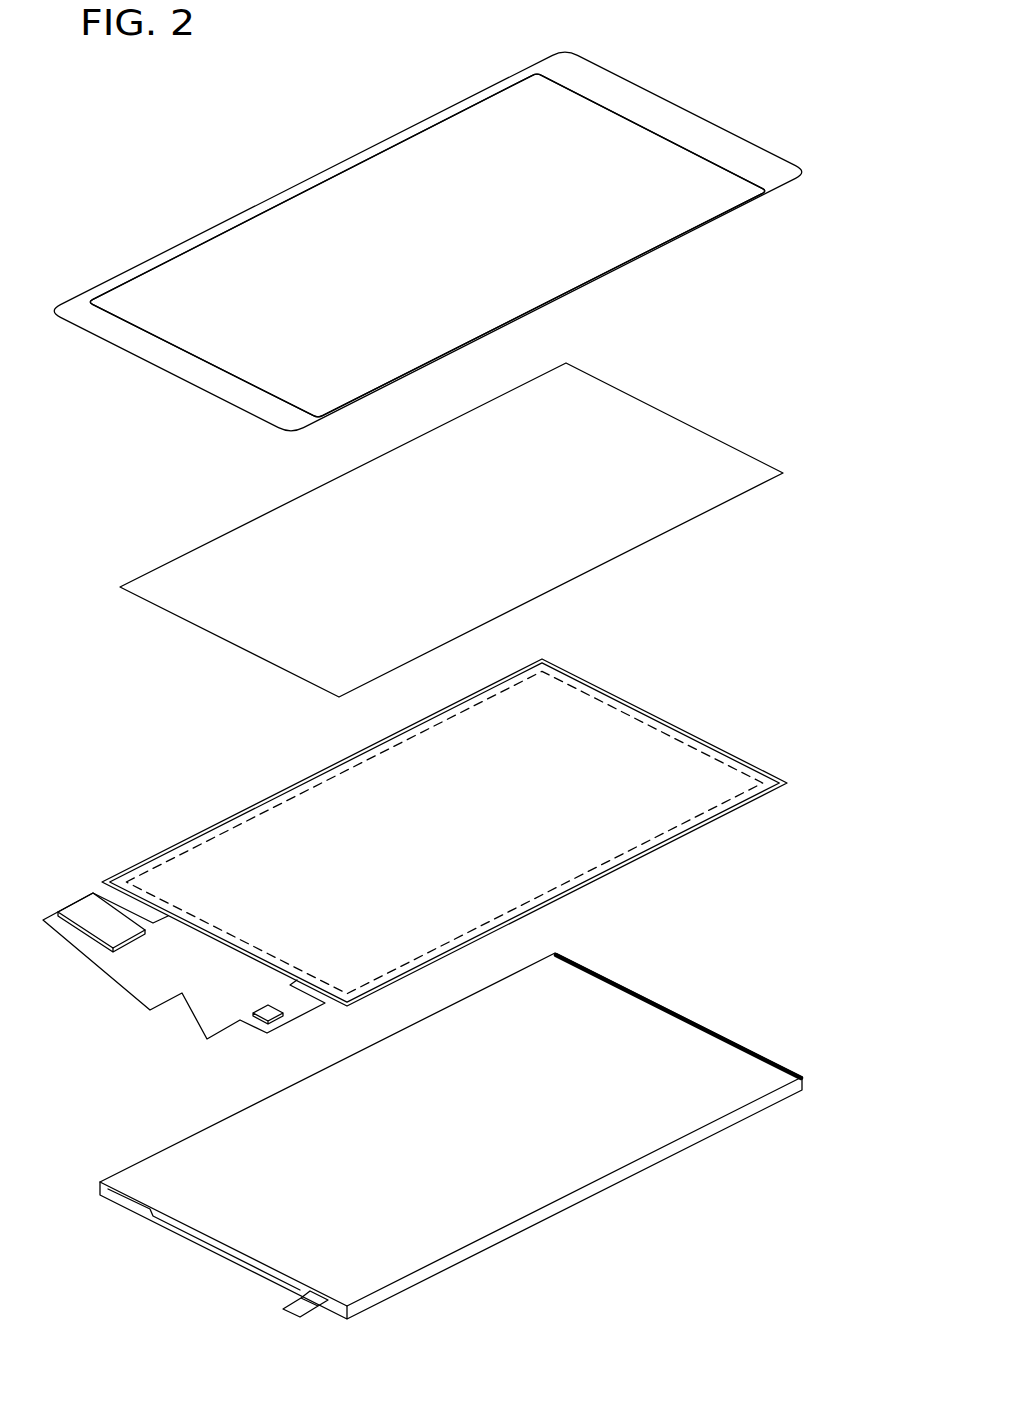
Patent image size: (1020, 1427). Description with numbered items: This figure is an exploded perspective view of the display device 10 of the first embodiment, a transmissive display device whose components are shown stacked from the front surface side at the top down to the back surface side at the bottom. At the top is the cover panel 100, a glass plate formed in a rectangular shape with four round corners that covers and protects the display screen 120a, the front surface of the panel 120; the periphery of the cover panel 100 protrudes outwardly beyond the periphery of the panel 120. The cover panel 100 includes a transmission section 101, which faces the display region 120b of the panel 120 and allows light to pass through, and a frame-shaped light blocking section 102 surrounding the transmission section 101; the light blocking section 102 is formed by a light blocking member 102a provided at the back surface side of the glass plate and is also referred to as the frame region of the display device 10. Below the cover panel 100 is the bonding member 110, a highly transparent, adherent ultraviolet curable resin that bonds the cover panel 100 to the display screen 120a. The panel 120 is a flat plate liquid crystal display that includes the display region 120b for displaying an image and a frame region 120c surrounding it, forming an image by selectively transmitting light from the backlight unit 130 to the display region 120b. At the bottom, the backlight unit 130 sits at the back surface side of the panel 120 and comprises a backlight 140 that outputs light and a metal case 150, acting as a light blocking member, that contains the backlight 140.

The display device 10 is at (212, 181).
The cover panel 100 is at (613, 66).
The transmission section 101 is at (589, 284).
The light blocking section 102 is at (675, 95).
The light blocking member 102a is at (775, 183).
The bonding member 110 is at (675, 442).
The panel 120 is at (580, 672).
The display screen 120a is at (325, 852).
The display region 120b is at (635, 745).
The frame region 120c is at (711, 819).
The backlight unit 130 is at (623, 983).
The backlight 140 is at (622, 1143).
The case 150 is at (573, 1203).